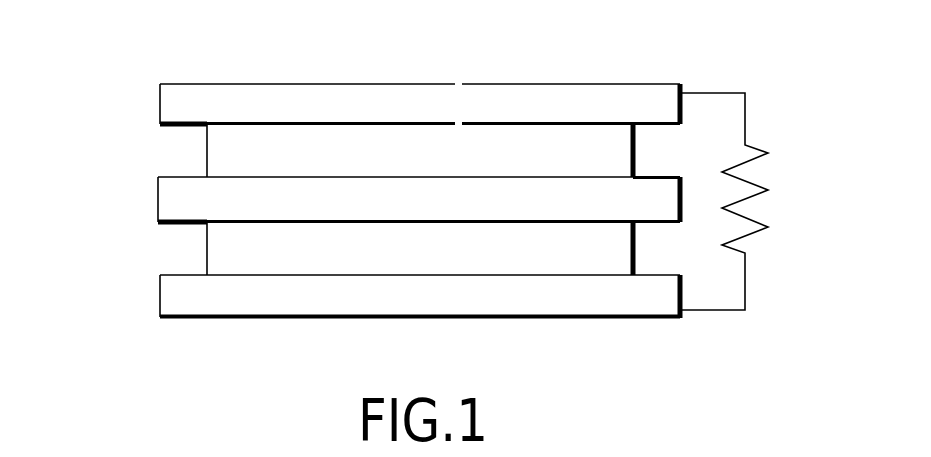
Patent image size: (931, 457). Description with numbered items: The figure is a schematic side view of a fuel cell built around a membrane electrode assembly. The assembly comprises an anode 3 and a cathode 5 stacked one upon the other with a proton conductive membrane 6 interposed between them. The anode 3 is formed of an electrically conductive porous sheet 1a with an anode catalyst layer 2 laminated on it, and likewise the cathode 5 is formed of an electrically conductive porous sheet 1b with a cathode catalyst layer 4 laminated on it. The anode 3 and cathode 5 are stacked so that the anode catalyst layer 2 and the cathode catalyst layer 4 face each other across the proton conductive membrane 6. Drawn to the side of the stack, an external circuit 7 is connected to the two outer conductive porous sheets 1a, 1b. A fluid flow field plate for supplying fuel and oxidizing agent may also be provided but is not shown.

The electrically conductive porous sheet 1a is at (177, 103).
The electrically conductive porous sheet 1b is at (177, 297).
The anode catalyst layer 2 is at (218, 155).
The anode 3 is at (78, 83).
The cathode catalyst layer 4 is at (218, 243).
The cathode 5 is at (78, 223).
The proton conductive membrane 6 is at (585, 198).
The external circuit 7 is at (746, 117).